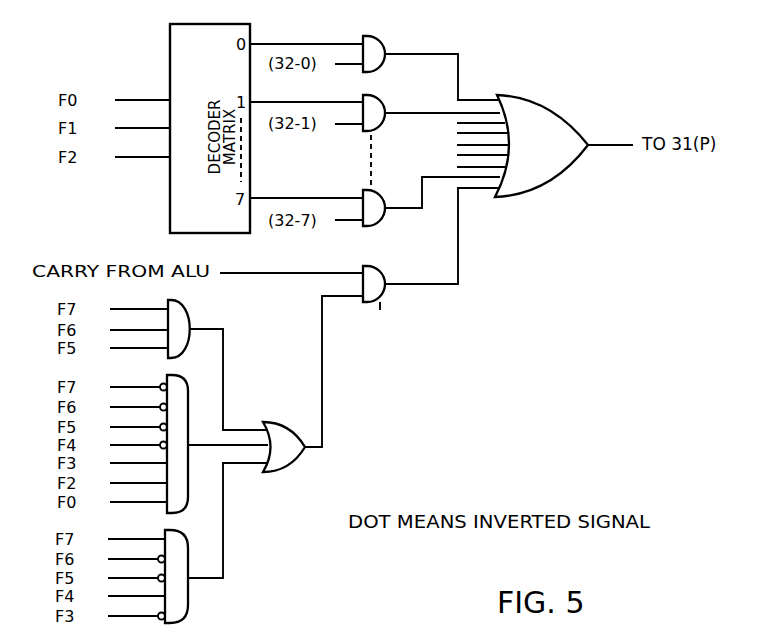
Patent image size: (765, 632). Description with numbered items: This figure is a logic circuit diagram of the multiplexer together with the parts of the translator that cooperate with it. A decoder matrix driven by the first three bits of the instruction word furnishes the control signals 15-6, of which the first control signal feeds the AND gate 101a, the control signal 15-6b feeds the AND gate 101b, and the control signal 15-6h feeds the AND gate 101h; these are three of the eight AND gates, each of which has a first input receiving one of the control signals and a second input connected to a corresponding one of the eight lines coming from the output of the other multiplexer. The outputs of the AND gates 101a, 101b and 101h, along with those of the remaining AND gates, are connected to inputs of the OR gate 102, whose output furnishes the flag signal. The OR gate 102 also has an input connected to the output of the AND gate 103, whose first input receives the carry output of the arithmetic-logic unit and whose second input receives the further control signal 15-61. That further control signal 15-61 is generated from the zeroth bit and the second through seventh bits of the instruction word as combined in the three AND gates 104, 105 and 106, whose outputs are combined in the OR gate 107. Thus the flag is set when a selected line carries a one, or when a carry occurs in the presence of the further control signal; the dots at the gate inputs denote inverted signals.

The control signals 15-6 is at (306, 32).
The control signal 15-6b is at (306, 90).
The control signal 15-6h is at (306, 186).
The further control signal 15-61 is at (361, 318).
The AND gate 101a is at (380, 45).
The AND gate 101b is at (380, 104).
The AND gate 101h is at (378, 197).
The OR gate 102 is at (566, 133).
The AND gate 103 is at (380, 276).
The AND gate 104 is at (187, 322).
The AND gate 105 is at (184, 387).
The AND gate 106 is at (180, 544).
The OR gate 107 is at (276, 428).